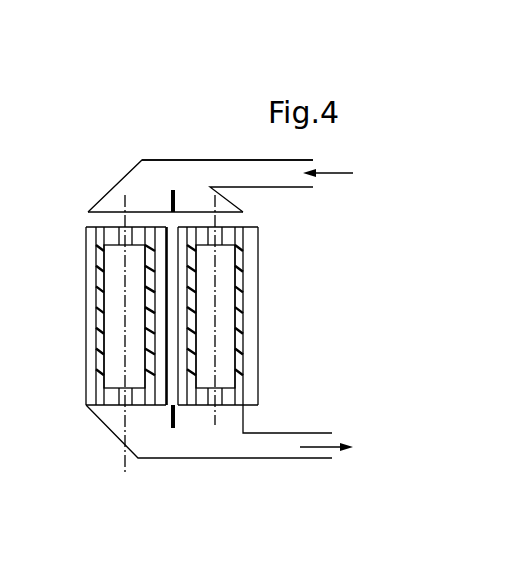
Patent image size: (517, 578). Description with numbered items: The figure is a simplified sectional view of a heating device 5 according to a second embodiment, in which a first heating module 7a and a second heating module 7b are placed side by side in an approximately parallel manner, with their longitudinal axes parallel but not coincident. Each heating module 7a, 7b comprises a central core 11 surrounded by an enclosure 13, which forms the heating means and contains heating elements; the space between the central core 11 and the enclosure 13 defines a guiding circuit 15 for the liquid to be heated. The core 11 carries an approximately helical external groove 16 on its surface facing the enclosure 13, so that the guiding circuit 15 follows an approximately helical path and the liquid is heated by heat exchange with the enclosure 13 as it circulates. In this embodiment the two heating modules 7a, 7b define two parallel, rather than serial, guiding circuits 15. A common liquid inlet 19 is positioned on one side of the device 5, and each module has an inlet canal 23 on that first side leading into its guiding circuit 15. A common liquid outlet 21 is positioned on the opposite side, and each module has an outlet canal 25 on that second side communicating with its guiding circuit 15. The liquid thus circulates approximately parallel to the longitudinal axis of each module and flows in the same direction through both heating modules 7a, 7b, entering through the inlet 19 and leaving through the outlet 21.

The heating device 5 is at (228, 303).
The first heating module 7a is at (92, 172).
The second heating module 7b is at (293, 208).
The central core 11 is at (227, 332).
The enclosure 13 is at (253, 248).
The guiding circuit 15 is at (97, 262).
The helical external groove 16 is at (100, 298).
The liquid inlet 19 is at (153, 148).
The liquid outlet 21 is at (162, 472).
The inlet canal 23 is at (118, 233).
The outlet canal 25 is at (122, 401).